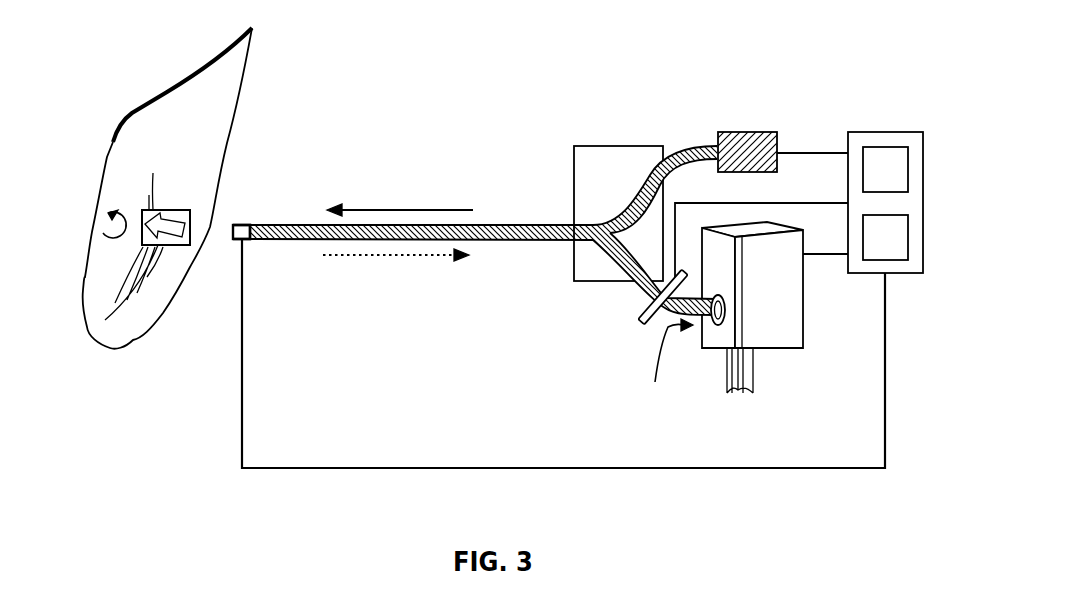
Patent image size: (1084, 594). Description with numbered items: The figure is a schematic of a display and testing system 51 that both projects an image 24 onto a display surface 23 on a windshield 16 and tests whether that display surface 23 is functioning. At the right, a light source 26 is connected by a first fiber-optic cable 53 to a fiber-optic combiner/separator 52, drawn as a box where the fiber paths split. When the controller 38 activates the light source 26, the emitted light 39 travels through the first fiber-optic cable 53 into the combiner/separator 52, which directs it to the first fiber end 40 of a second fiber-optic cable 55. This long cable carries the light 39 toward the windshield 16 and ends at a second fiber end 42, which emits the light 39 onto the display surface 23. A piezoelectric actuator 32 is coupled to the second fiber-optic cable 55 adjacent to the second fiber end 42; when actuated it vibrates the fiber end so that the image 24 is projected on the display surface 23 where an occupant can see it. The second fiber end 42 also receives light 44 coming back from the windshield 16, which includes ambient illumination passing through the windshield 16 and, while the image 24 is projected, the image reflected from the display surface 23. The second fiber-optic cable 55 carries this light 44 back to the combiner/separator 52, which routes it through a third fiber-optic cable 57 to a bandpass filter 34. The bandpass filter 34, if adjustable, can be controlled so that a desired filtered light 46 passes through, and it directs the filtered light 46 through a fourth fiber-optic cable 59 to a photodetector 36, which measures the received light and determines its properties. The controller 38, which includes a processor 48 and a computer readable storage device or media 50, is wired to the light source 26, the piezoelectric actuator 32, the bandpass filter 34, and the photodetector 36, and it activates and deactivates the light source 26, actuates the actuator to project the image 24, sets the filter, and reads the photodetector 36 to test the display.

The windshield 16 is at (238, 68).
The display surface 23 is at (100, 233).
The image 24 is at (142, 210).
The light source 26 is at (747, 132).
The piezoelectric actuator 32 is at (247, 240).
The bandpass filter 34 is at (642, 320).
The photodetector 36 is at (783, 327).
The controller 38 is at (885, 132).
The light 39 is at (398, 210).
The first fiber end 40 is at (552, 224).
The second fiber end 42 is at (238, 225).
The light 44 is at (377, 257).
The filtered light 46 is at (668, 369).
The processor 48 is at (899, 252).
The computer readable storage device or media 50 is at (899, 184).
The display and testing system 51 is at (631, 54).
The fiber-optic combiner/separator 52 is at (620, 146).
The first fiber-optic cable 53 is at (692, 146).
The second fiber-optic cable 55 is at (520, 241).
The third fiber-optic cable 57 is at (642, 290).
The fourth fiber-optic cable 59 is at (708, 323).